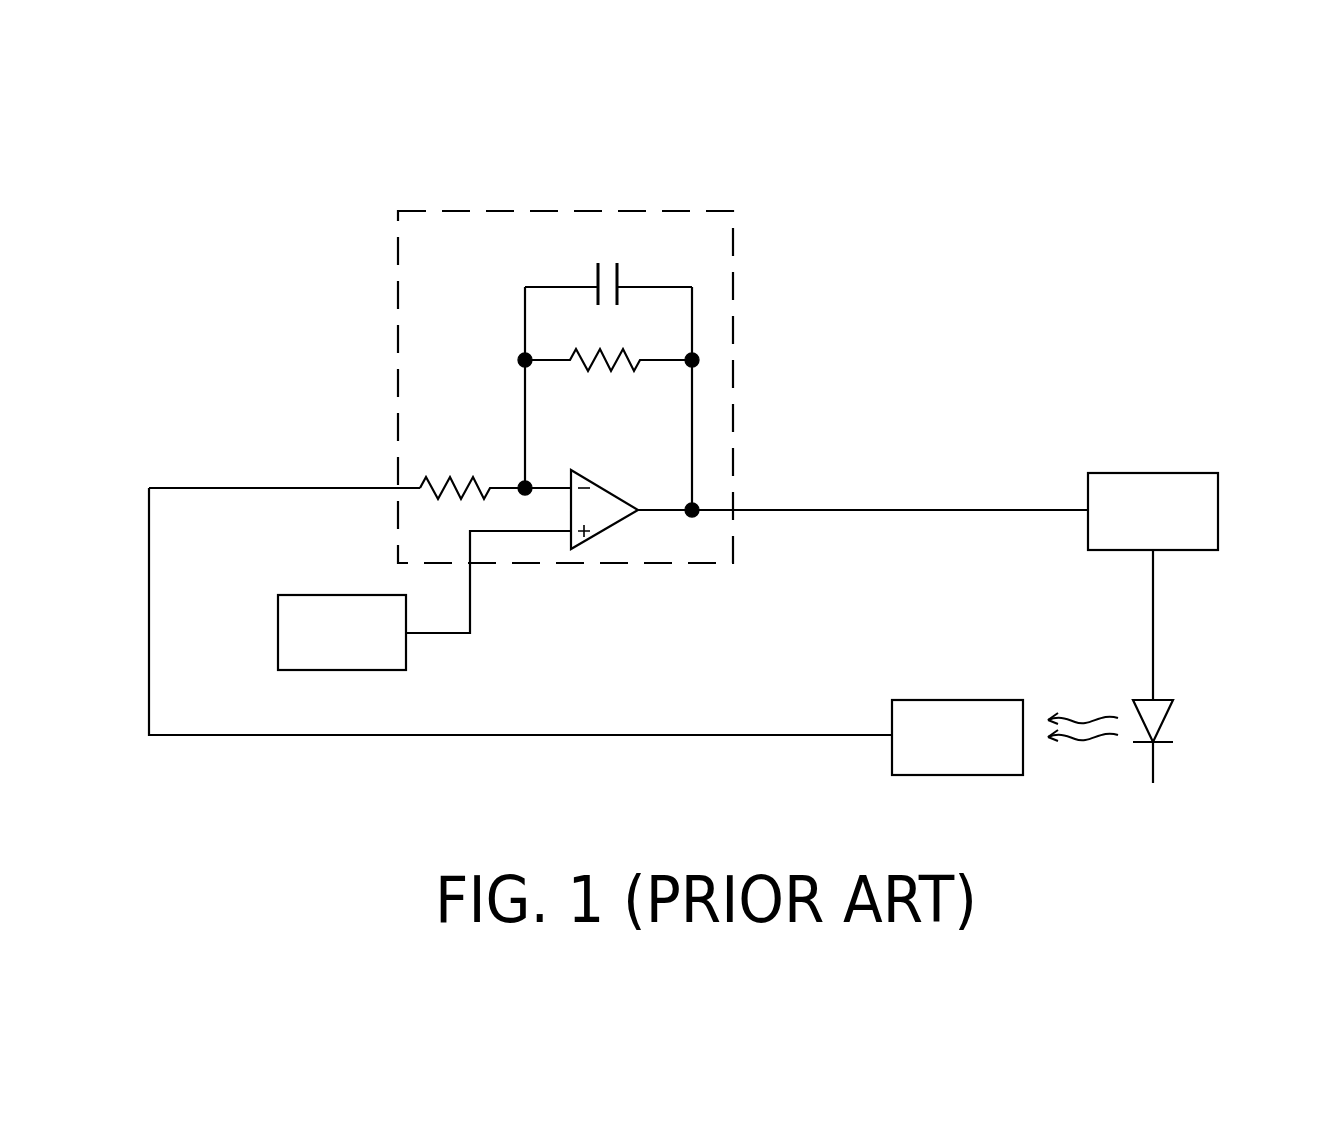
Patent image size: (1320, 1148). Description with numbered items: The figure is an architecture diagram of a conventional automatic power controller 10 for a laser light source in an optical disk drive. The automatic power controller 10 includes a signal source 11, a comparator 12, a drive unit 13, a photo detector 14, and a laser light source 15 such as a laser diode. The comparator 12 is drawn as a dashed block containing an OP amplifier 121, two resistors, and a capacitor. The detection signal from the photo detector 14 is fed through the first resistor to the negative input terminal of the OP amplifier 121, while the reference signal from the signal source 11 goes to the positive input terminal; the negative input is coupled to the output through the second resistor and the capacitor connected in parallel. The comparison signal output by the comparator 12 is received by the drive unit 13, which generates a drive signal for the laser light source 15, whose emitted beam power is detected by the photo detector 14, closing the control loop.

The automatic power controller 10 is at (258, 302).
The signal source 11 is at (348, 650).
The comparator 12 is at (452, 228).
The OP amplifier 121 is at (600, 535).
The drive unit 13 is at (1153, 485).
The photo detector 14 is at (958, 712).
The laser light source 15 is at (1197, 700).